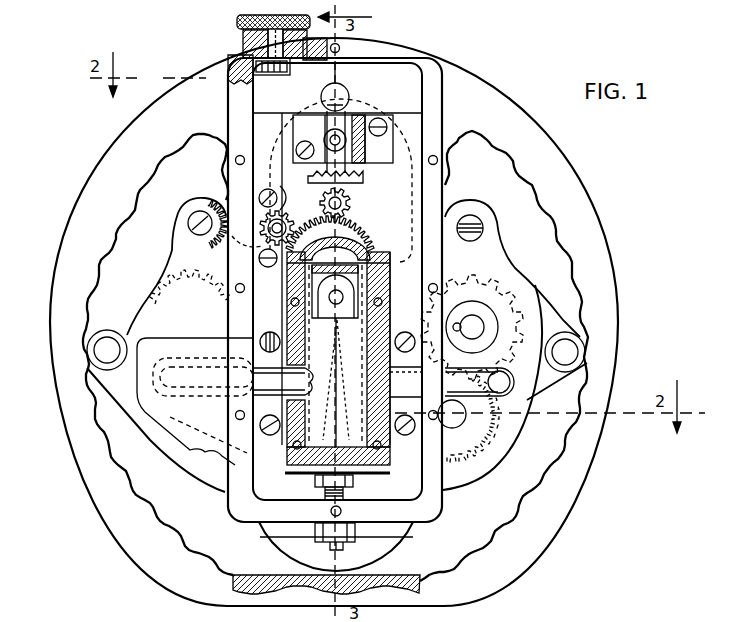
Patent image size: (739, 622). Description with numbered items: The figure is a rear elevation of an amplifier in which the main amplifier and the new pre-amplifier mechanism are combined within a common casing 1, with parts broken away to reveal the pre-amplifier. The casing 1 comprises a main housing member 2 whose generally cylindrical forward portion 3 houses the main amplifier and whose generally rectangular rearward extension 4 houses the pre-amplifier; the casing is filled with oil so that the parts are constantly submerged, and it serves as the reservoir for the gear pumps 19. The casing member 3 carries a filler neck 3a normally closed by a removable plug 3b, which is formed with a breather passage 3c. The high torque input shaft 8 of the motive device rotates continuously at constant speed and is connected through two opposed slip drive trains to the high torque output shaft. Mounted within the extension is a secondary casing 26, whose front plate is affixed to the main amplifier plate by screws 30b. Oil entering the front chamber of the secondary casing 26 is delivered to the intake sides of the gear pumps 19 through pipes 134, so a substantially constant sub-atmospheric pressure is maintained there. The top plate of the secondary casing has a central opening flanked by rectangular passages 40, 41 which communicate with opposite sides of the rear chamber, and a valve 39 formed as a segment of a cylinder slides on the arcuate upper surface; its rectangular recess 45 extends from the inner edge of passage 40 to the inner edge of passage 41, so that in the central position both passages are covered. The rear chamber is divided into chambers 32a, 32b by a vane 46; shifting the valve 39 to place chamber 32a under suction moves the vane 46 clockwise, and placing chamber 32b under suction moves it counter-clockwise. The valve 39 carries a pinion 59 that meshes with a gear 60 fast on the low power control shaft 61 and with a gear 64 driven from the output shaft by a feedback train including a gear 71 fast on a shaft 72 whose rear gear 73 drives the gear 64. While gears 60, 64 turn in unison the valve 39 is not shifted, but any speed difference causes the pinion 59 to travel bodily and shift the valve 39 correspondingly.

The casing 1 is at (76, 478).
The main housing member 2 is at (584, 188).
The generally cylindrical forward portion 3 is at (137, 121).
The filler neck 3a is at (248, 44).
The removable plug 3b is at (245, 25).
The breather passage 3c is at (278, 14).
The generally rectangular rearward extension 4 is at (437, 82).
The high torque input shaft 8 is at (100, 352).
The gear pump 19 is at (513, 313).
The secondary casing 26 is at (281, 460).
The screws 30b is at (272, 332).
The chamber 32a is at (295, 442).
The chamber 32b is at (384, 440).
The valve 39 is at (360, 237).
The passage 40 is at (288, 262).
The passage 41 is at (363, 264).
The rectangular recess 45 is at (370, 248).
The vane 46 is at (330, 442).
The pinion 59 is at (324, 203).
The gear 60 is at (365, 178).
The low power control shaft 61 is at (346, 136).
The gear 64 is at (350, 221).
The gear 71 is at (223, 197).
The shaft 72 is at (268, 230).
The gear 73 is at (274, 190).
The pipes 134 is at (193, 387).